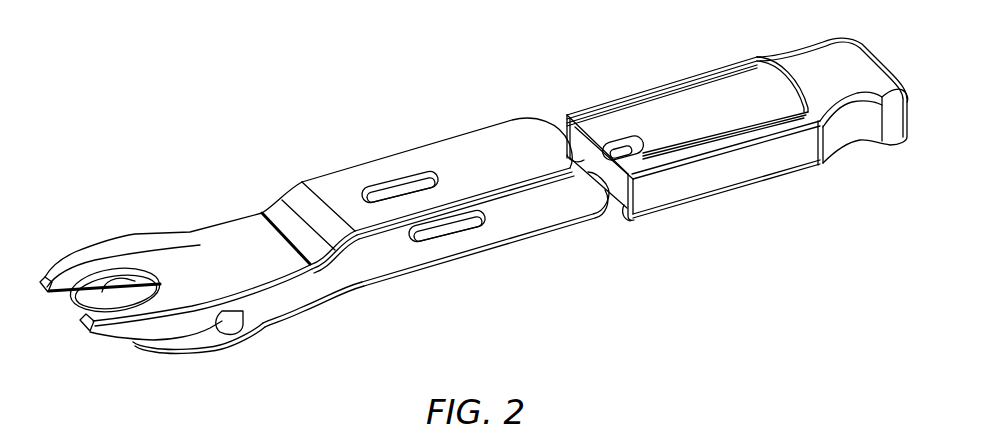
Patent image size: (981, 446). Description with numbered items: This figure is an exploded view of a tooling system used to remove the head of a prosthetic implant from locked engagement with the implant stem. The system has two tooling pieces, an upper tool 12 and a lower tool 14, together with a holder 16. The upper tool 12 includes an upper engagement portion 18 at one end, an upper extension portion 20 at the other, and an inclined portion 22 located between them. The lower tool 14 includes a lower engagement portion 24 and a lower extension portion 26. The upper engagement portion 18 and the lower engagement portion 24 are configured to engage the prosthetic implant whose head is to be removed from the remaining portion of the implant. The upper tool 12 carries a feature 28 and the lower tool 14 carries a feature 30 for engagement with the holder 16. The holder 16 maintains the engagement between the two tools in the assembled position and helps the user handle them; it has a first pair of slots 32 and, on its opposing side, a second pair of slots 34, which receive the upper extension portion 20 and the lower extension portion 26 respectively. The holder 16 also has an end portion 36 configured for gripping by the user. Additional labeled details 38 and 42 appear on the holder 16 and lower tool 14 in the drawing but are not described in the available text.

The upper tool 12 is at (104, 248).
The lower tool 14 is at (184, 353).
The holder 16 is at (743, 170).
The upper engagement portion 18 is at (210, 236).
The upper extension portion 20 is at (464, 143).
The inclined portion 22 is at (300, 192).
The lower engagement portion 24 is at (222, 343).
The lower extension portion 26 is at (503, 230).
The feature 28 is at (400, 186).
The feature 30 is at (460, 226).
The first pair of slots 32 is at (714, 137).
The second pair of slots 34 is at (575, 163).
The end portion 36 is at (823, 70).
The locking tab 38 is at (632, 137).
The lower strip 42 is at (372, 268).